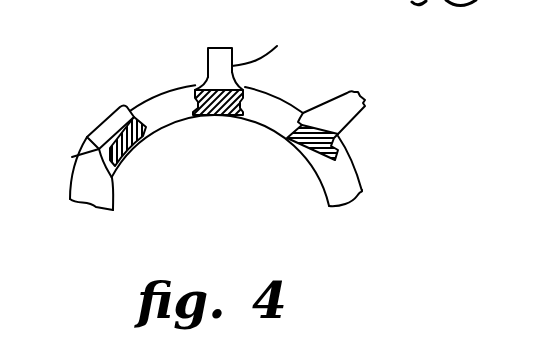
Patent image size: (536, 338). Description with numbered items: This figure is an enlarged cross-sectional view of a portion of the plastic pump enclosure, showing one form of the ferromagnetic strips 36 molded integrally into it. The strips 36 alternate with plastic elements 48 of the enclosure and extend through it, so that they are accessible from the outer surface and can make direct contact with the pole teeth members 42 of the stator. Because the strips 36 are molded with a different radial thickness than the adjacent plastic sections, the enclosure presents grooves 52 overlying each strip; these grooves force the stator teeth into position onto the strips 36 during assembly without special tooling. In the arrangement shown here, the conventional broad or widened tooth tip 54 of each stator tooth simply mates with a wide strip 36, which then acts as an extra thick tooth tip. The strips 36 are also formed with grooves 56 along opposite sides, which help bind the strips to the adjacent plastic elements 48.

The ferromagnetic strips 36 is at (133, 152).
The pole teeth members 42 is at (320, 105).
The plastic elements 48 is at (258, 118).
The grooves 52 is at (105, 120).
The tooth tip 54 is at (208, 78).
The grooves 56 is at (72, 157).